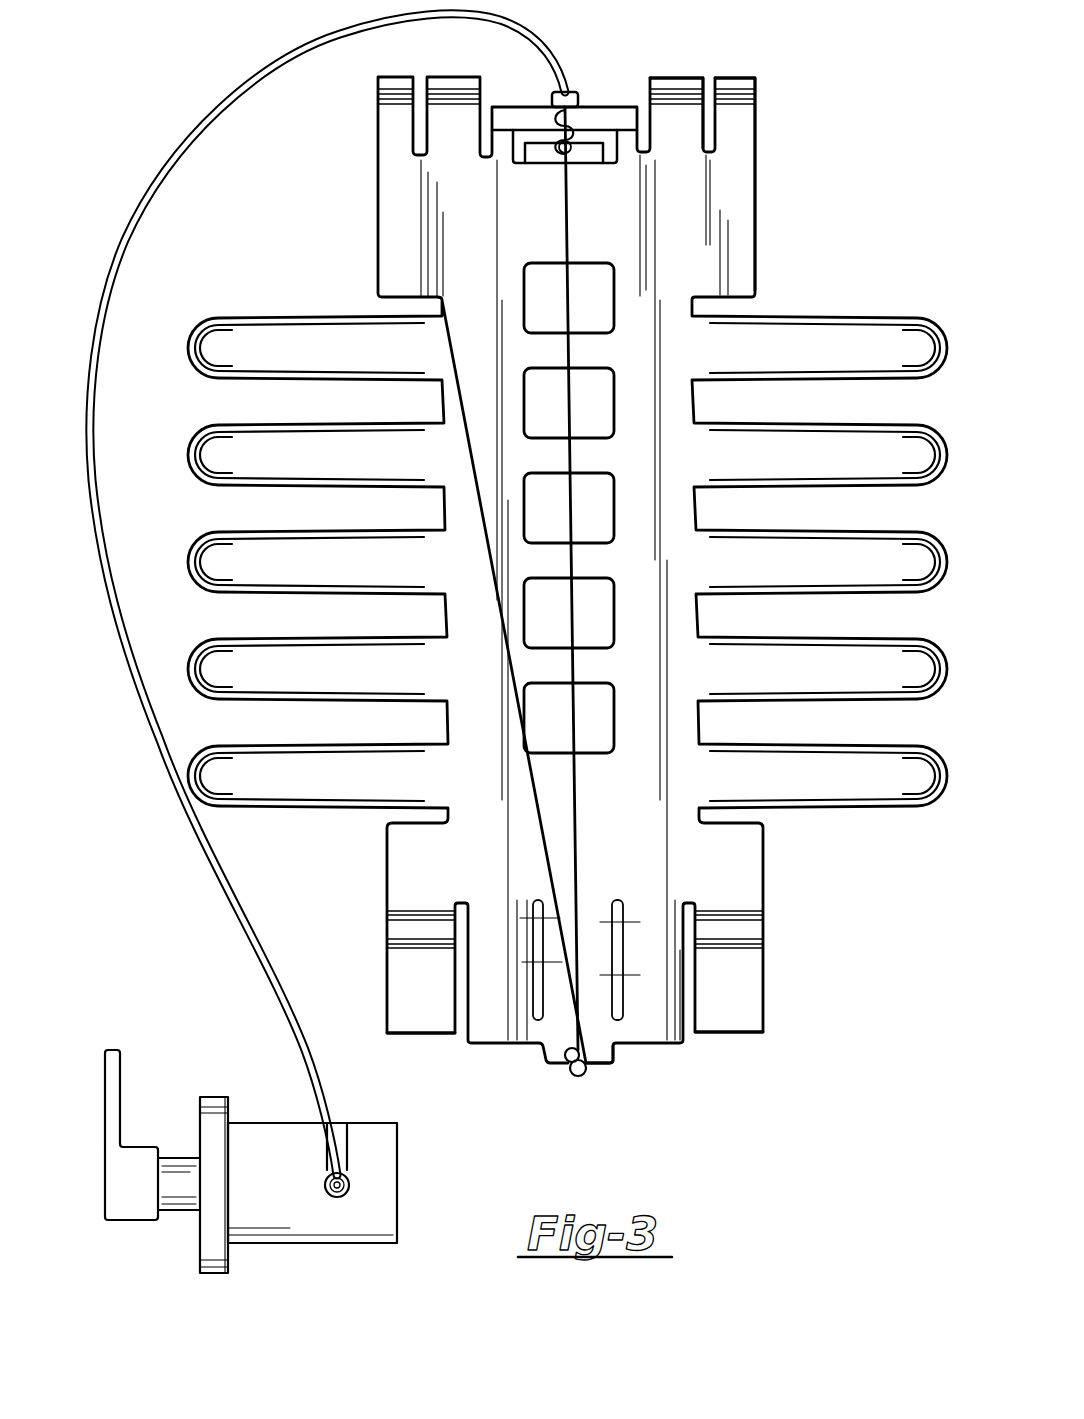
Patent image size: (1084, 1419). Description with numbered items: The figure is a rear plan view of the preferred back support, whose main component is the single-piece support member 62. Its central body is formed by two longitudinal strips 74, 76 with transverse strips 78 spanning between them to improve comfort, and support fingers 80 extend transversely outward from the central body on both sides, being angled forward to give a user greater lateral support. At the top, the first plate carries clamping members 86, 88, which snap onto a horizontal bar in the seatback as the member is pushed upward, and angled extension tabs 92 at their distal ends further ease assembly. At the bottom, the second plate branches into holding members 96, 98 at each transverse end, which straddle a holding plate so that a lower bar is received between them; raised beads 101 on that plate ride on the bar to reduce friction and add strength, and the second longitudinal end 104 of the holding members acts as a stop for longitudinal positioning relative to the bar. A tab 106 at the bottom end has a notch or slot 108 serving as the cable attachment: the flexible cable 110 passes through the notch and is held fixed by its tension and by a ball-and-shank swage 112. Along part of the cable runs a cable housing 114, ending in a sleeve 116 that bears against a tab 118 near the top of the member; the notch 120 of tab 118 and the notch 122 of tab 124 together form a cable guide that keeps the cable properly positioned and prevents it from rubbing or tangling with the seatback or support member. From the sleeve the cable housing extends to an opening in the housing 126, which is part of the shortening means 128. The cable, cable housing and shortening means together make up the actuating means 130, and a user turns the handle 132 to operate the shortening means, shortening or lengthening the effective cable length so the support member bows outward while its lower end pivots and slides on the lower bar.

The single-piece support member 62 is at (768, 278).
The longitudinal strip 74 is at (628, 512).
The longitudinal strip 76 is at (515, 607).
The transverse strips 78 is at (597, 460).
The support fingers 80 is at (220, 452).
The clamping member 86 is at (688, 156).
The clamping member 88 is at (733, 127).
The extension tabs 92 is at (745, 82).
The holding member 96 is at (740, 993).
The holding member 98 is at (410, 973).
The beads 101 is at (613, 905).
The second longitudinal end 104 is at (415, 1035).
The tab 106 is at (616, 1062).
The notch or slot 108 is at (562, 1062).
The flexible cable 110 is at (570, 245).
The swage 112 is at (587, 1077).
The cable housing 114 is at (152, 170).
The sleeve 116 is at (578, 92).
The tab 118 is at (618, 107).
The notch 120 is at (556, 116).
The notch 122 is at (545, 152).
The tab 124 is at (600, 165).
The housing 126 is at (305, 1245).
The shortening means 128 is at (228, 1175).
The actuating means 130 is at (140, 741).
The handle 132 is at (105, 1220).